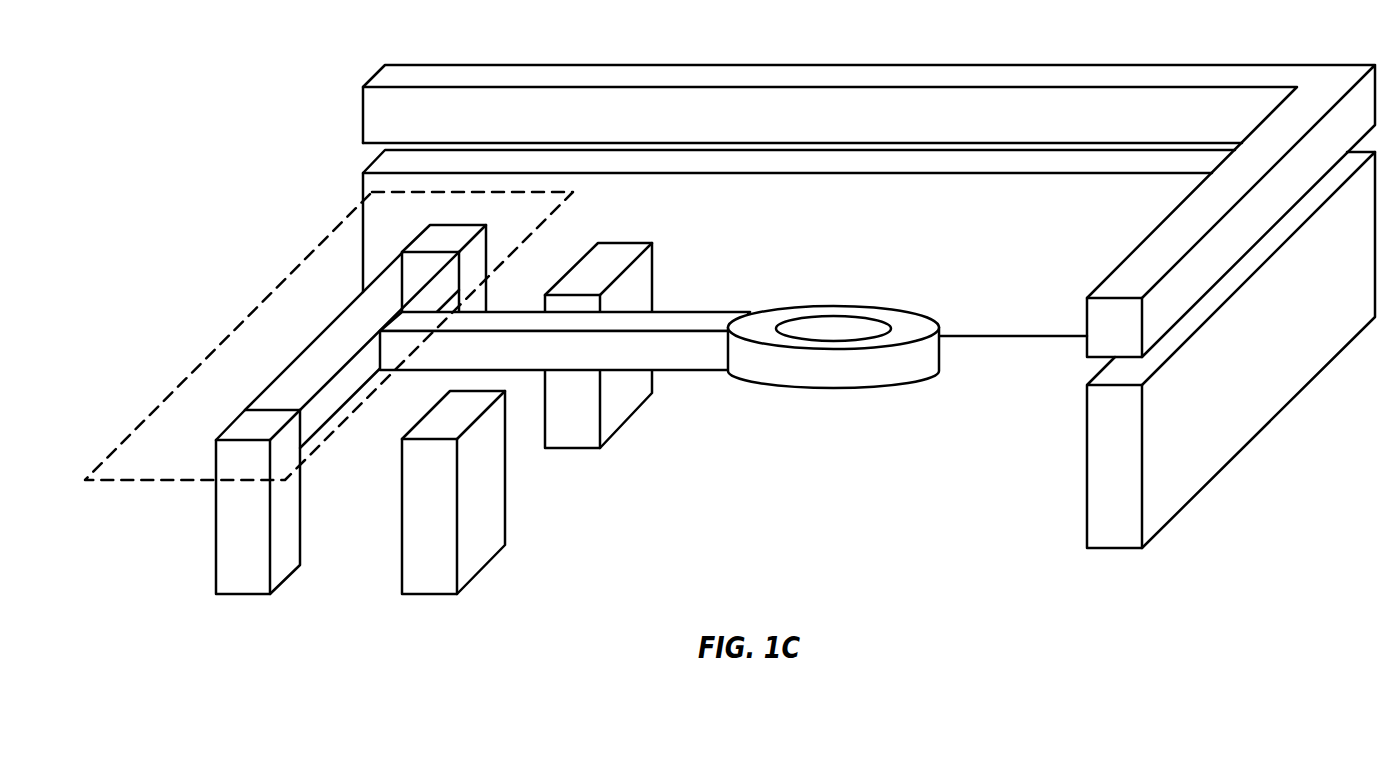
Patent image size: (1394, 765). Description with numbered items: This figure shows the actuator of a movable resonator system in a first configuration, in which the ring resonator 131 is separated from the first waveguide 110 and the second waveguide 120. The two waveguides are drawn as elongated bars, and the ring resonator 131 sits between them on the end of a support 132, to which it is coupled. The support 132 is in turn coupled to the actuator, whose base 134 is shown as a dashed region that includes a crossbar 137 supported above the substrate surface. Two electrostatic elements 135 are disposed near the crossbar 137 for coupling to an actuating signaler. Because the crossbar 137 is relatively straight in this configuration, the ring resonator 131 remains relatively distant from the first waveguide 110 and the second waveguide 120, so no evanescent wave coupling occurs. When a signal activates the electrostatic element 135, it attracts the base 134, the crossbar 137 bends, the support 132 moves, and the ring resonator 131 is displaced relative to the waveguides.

The first waveguide 110 is at (773, 70).
The second waveguide 120 is at (1235, 352).
The ring resonator 131 is at (915, 365).
The support 132 is at (670, 318).
The base 134 is at (183, 461).
The electrostatic element 135 is at (622, 415).
The crossbar 137 is at (327, 352).